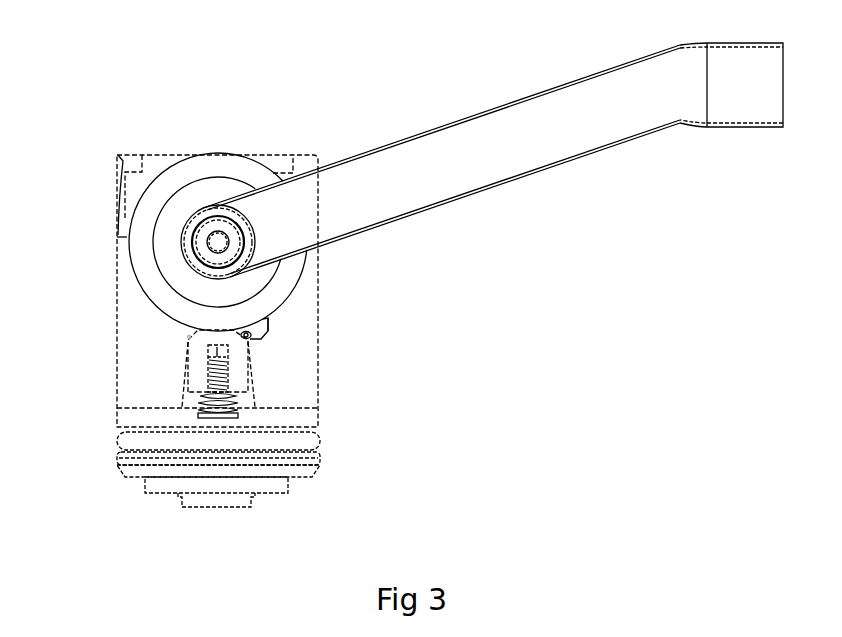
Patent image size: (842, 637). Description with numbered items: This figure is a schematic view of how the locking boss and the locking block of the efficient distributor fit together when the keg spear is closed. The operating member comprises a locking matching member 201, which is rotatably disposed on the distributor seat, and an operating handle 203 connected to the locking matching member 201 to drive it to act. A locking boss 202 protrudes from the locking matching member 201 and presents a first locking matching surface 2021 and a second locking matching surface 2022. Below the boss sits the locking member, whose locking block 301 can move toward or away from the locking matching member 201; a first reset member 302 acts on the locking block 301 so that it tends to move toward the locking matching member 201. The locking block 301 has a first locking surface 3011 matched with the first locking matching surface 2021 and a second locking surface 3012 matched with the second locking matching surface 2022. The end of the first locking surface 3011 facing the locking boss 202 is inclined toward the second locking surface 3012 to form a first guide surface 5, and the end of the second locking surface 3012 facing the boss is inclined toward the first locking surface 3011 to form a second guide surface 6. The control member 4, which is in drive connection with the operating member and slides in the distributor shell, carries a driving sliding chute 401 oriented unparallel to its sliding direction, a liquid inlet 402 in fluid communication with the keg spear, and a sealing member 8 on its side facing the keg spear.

The control member 4 is at (118, 268).
The driving sliding chute 401 is at (138, 178).
The liquid inlet 402 is at (181, 504).
The locking matching member 201 is at (220, 163).
The locking boss 202 is at (254, 328).
The operating handle 203 is at (488, 142).
The first locking matching surface 2021 is at (268, 323).
The second locking matching surface 2022 is at (246, 336).
The first guide surface 5 is at (188, 337).
The second guide surface 6 is at (241, 334).
The first locking surface 3011 is at (187, 355).
The second locking surface 3012 is at (242, 355).
The locking block 301 is at (238, 363).
The first reset member 302 is at (236, 396).
The sealing member 8 is at (152, 483).